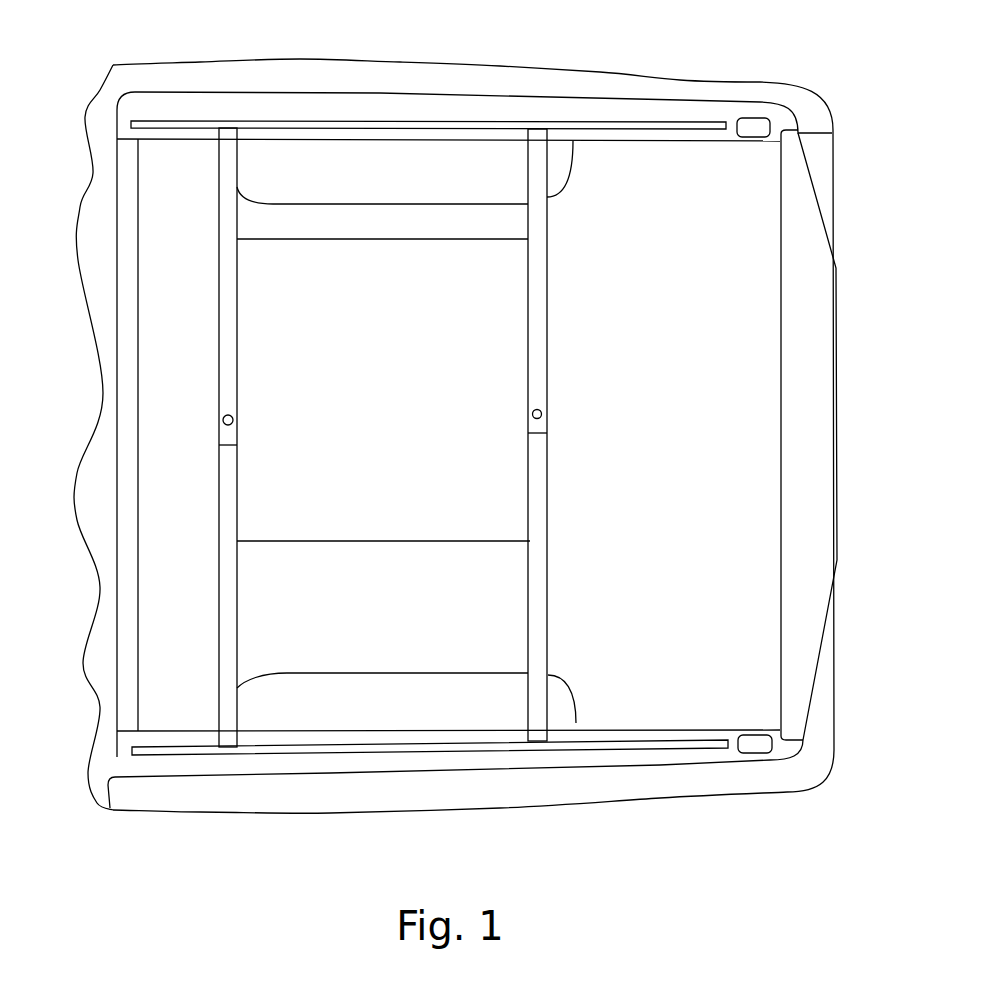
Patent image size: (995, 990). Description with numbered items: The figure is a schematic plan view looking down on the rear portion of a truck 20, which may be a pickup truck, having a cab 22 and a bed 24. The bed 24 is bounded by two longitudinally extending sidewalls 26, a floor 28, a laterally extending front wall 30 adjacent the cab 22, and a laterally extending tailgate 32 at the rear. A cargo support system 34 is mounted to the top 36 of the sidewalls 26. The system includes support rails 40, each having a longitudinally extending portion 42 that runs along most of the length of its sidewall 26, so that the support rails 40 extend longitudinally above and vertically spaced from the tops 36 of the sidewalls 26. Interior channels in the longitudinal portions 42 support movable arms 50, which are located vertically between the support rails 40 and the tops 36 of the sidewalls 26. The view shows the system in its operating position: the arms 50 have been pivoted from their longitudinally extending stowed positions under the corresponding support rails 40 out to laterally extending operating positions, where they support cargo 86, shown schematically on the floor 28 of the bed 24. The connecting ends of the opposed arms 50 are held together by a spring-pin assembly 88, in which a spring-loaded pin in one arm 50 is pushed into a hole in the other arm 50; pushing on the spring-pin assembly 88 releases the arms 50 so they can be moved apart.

The truck 20 is at (688, 40).
The cab 22 is at (78, 467).
The bed 24 is at (415, 63).
The sidewalls 26 is at (557, 805).
The floor 28 is at (643, 437).
The front wall 30 is at (113, 522).
The tailgate 32 is at (837, 222).
The cargo support system 34 is at (201, 799).
The top 36 is at (267, 92).
The support rail 40 is at (482, 122).
The longitudinally extending portion 42 is at (420, 752).
The movable arms 50 is at (215, 225).
The cargo 86 is at (297, 543).
The spring-pin assembly 88 is at (222, 415).